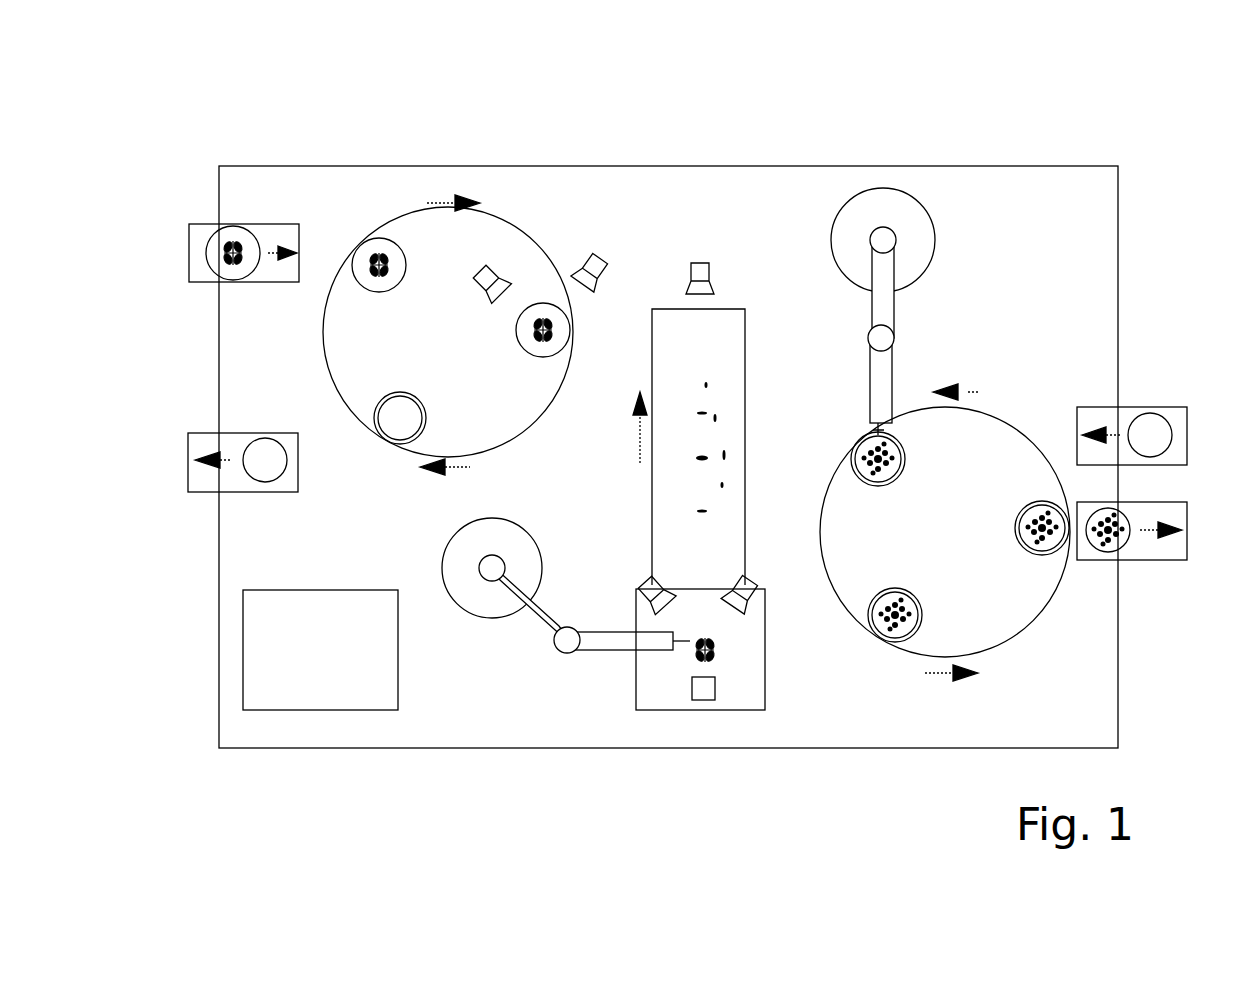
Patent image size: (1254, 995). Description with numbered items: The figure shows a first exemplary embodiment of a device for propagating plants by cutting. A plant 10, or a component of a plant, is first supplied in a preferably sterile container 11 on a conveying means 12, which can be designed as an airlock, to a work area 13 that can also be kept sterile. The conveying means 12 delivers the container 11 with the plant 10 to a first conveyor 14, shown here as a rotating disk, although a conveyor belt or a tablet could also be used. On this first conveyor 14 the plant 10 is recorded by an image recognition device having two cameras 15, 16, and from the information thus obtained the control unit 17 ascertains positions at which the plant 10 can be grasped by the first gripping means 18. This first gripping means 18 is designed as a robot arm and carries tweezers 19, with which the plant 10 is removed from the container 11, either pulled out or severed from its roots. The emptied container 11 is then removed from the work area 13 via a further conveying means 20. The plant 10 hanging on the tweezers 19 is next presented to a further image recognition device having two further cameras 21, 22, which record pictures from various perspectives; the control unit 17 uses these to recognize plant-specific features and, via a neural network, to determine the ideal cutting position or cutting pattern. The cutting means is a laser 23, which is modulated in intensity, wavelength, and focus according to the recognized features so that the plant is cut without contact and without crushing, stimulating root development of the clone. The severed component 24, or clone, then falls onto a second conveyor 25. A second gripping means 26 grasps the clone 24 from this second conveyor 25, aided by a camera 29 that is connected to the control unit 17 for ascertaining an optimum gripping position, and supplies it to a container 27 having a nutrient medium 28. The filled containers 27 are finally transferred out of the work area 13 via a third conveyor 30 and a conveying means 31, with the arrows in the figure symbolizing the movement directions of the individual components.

The plant 10 is at (240, 232).
The container 11 is at (218, 283).
The conveying means 12 is at (203, 224).
The work area 13 is at (1083, 218).
The first conveyor 14 is at (530, 238).
The camera 15 is at (489, 266).
The camera 16 is at (604, 257).
The control unit 17 is at (328, 711).
The first gripping means 18 is at (587, 652).
The tweezers 19 is at (689, 642).
The further conveying means 20 is at (203, 491).
The further camera 21 is at (644, 588).
The further camera 22 is at (757, 602).
The laser 23 is at (715, 691).
The severed component 24 is at (718, 420).
The second conveyor 25 is at (738, 309).
The second gripping means 26 is at (897, 305).
The container 27 is at (905, 458).
The nutrient medium 28 is at (890, 425).
The camera 29 is at (700, 262).
The third conveyor 30 is at (1043, 615).
The conveying means 31 is at (1175, 561).